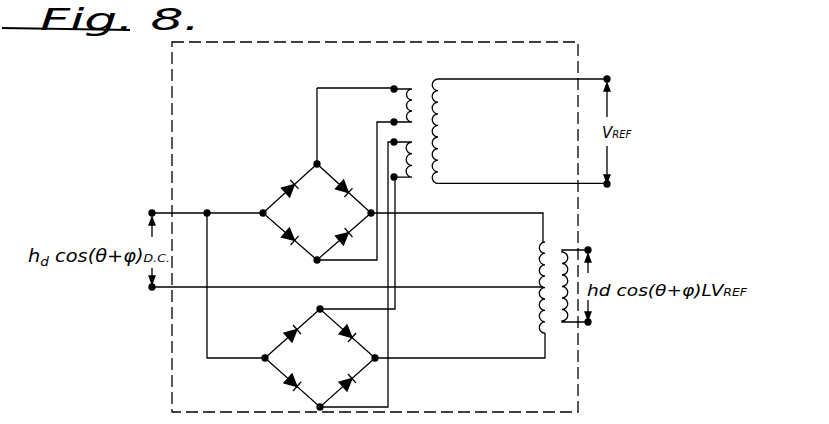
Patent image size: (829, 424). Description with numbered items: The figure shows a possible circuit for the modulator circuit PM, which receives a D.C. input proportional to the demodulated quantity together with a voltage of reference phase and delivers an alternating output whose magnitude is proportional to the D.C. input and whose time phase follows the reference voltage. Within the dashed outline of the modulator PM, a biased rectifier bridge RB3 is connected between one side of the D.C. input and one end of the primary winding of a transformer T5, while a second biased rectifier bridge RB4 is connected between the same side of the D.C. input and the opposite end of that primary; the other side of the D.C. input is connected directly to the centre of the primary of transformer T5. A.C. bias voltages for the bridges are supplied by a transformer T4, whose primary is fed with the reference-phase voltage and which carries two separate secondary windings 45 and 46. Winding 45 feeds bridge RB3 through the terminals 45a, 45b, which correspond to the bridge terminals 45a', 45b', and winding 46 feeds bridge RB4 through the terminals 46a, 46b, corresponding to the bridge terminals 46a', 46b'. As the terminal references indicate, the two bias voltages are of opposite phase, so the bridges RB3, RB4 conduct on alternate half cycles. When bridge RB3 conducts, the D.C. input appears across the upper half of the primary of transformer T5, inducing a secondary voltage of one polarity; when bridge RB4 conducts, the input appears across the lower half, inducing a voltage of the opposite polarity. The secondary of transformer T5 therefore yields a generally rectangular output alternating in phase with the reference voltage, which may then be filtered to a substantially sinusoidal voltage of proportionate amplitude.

The secondary winding of transformer T4 45 is at (403, 103).
The terminal 45a is at (424, 70).
The terminal 45b is at (362, 139).
The terminal reference 45a' is at (284, 147).
The terminal reference 45b' is at (285, 265).
The secondary winding of transformer T4 46 is at (417, 163).
The terminal 46a is at (438, 191).
The terminal 46b is at (451, 133).
The terminal reference 46a' is at (286, 304).
The terminal reference 46b' is at (280, 399).
The biased rectifier bridge RB3 is at (317, 210).
The biased rectifier bridge RB4 is at (312, 357).
The transformer T4 is at (467, 128).
The transformer T5 is at (563, 278).
The modulator circuit PM is at (173, 348).